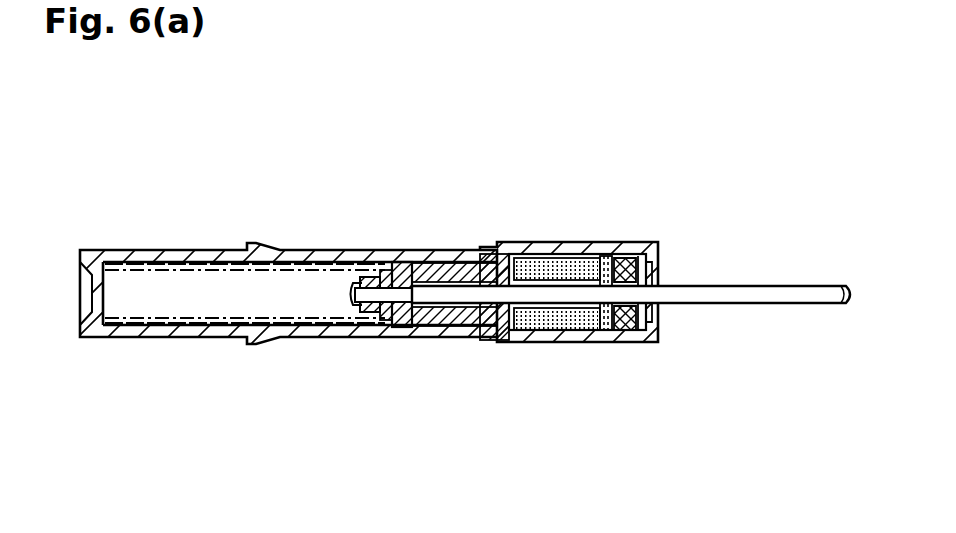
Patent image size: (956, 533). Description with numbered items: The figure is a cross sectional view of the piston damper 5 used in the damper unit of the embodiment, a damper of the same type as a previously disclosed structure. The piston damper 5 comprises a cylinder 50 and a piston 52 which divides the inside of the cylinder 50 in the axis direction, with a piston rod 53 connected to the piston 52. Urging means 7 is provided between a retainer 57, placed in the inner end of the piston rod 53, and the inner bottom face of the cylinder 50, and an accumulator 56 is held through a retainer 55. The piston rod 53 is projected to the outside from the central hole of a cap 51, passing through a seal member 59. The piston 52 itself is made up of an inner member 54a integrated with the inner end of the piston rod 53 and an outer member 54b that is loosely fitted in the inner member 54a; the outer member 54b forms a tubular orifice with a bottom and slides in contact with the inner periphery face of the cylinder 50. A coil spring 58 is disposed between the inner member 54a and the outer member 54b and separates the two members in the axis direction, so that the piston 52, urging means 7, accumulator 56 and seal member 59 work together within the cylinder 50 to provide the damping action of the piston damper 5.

The piston damper 5 is at (266, 210).
The urging means 7 is at (168, 338).
The cylinder 50 is at (150, 250).
The cap 51 is at (652, 245).
The piston 52 is at (407, 250).
The piston rod 53 is at (773, 284).
The inner member 54a is at (503, 254).
The outer member 54b is at (455, 250).
The retainer 55 is at (562, 342).
The accumulator 56 is at (598, 250).
The retainer 57 is at (390, 338).
The coil spring 58 is at (448, 340).
The seal member 59 is at (620, 342).